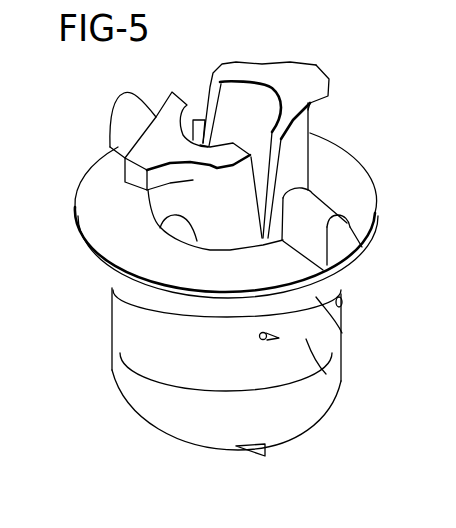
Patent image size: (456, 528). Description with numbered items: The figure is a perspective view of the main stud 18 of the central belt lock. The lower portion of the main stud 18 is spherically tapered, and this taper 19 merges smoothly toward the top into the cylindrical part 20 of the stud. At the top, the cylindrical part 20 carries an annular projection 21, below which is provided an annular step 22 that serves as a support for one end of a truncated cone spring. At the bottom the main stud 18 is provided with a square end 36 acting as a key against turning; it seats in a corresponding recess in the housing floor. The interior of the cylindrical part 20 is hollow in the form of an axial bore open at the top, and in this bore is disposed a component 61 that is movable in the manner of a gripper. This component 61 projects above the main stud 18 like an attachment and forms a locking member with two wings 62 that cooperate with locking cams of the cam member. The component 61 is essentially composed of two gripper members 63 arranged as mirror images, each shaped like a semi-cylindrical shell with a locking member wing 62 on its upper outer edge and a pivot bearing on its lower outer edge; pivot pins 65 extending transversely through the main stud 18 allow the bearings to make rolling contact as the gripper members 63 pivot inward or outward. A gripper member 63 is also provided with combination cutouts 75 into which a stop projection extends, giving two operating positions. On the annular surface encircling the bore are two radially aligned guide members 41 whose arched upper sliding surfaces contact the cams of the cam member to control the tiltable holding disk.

The main stud 18 is at (370, 282).
The taper 19 is at (145, 404).
The cylindrical part 20 is at (343, 379).
The annular projection 21 is at (362, 249).
The annular step 22 is at (344, 332).
The square end 36 is at (254, 458).
The guide members 41 is at (318, 210).
The gripper-like component 61 is at (187, 72).
The locking member wings 62 is at (127, 170).
The gripper members 63 is at (157, 203).
The pivot pins 65 is at (346, 303).
The combination cutouts 75 is at (173, 231).